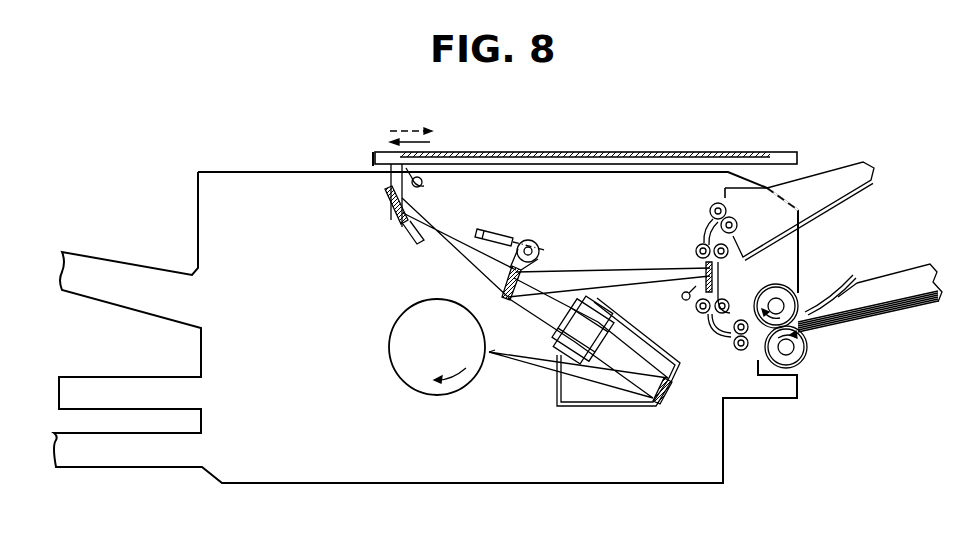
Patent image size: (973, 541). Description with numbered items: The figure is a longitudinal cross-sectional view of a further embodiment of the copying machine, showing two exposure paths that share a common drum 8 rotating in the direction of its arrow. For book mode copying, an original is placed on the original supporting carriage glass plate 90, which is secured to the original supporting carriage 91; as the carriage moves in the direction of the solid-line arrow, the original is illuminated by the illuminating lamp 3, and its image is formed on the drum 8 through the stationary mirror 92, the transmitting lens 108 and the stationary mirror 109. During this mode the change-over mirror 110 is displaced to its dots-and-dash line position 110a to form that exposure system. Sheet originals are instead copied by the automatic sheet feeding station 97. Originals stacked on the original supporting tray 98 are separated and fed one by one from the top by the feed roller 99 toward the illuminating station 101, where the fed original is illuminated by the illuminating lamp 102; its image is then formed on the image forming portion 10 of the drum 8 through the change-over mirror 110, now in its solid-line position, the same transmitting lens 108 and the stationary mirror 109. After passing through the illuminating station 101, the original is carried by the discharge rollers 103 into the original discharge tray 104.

The illuminating lamp 3 is at (422, 185).
The drum 8 is at (397, 368).
The image forming portion 10 is at (487, 354).
The original supporting carriage glass plate 90 is at (720, 152).
The original supporting carriage 91 is at (781, 152).
The stationary mirror 92 is at (387, 196).
The automatic sheet feeding station 97 is at (806, 351).
The original supporting tray 98 is at (916, 298).
The feed roller 99 is at (780, 284).
The illuminating station 101 is at (705, 266).
The illuminating lamp 102 is at (682, 296).
The discharge rollers 103 is at (710, 210).
The original discharge tray 104 is at (845, 184).
The transmitting lens 108 is at (561, 322).
The stationary mirror 109 is at (656, 404).
The change-over mirror 110 is at (519, 282).
The dots-and-dash line position of change-over mirror 110a is at (497, 232).